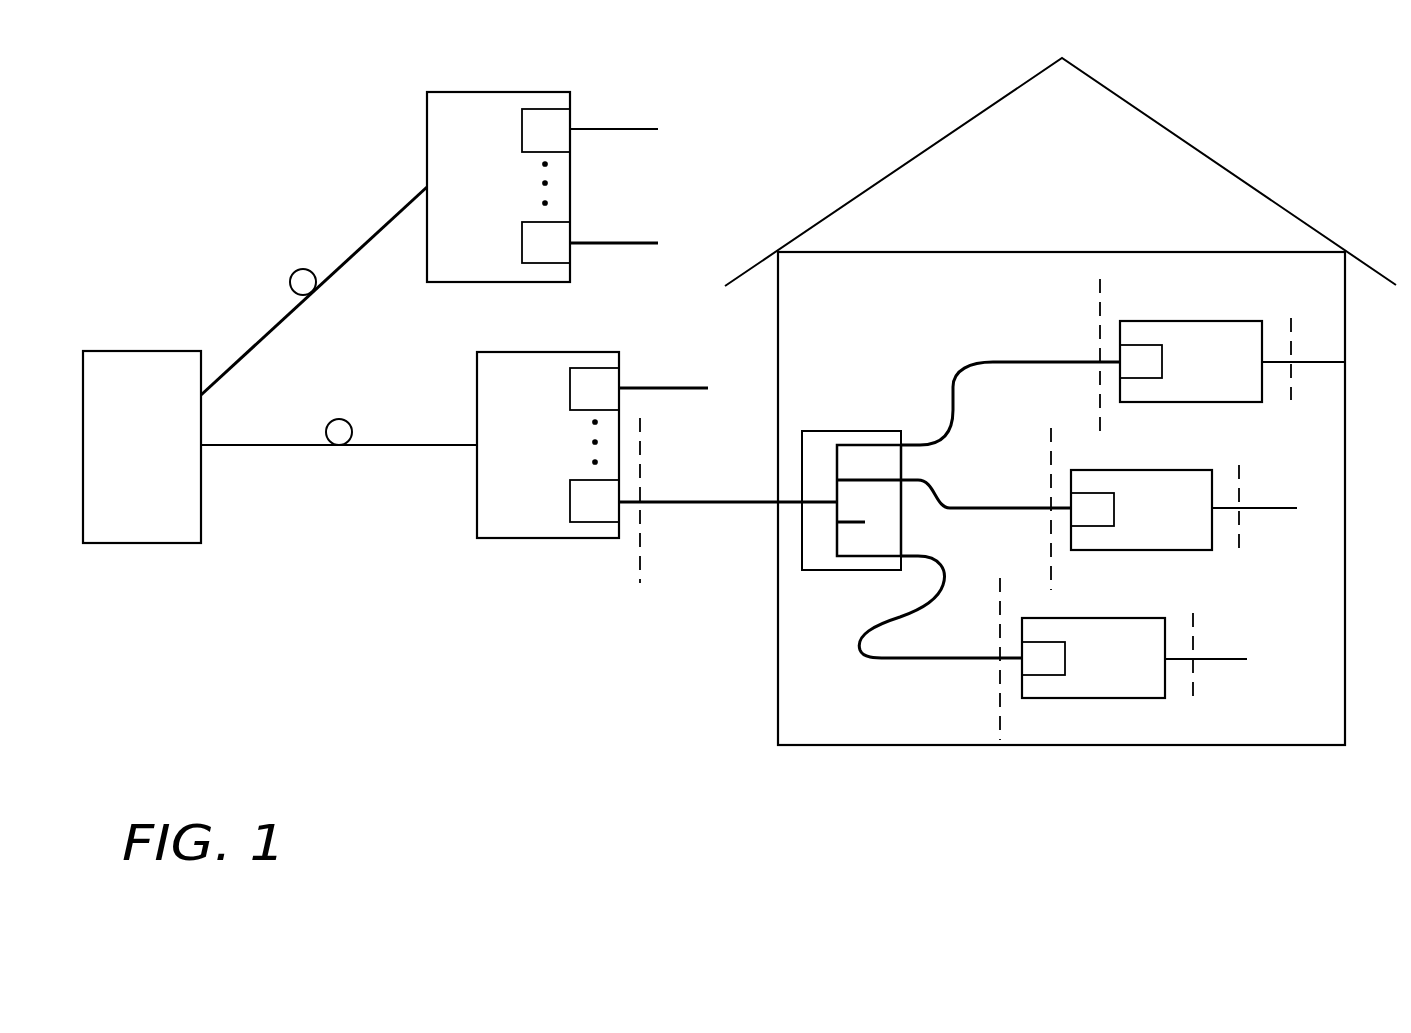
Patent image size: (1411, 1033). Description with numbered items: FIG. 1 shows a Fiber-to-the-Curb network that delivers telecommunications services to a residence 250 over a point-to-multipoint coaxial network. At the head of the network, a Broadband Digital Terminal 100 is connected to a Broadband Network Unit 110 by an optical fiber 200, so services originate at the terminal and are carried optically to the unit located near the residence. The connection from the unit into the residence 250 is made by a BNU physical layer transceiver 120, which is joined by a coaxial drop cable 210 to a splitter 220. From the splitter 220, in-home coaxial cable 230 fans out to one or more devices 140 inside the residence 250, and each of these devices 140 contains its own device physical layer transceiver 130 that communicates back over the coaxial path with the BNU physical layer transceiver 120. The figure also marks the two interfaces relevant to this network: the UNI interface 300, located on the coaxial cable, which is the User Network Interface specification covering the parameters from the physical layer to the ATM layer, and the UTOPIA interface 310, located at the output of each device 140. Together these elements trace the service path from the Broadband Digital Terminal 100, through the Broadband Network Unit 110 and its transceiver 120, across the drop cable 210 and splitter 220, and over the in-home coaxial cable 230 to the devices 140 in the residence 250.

The Broadband Digital Terminal 100 is at (133, 543).
The Broadband Network Unit 110 is at (462, 92).
The BNU physical layer transceiver 120 is at (570, 110).
The device physical layer transceiver 130 is at (1044, 676).
The devices 140 is at (1117, 698).
The optical fiber 200 is at (355, 257).
The coaxial drop cable 210 is at (617, 129).
The splitter 220 is at (817, 571).
The in-home coaxial cable 230 is at (915, 660).
The residence 250 is at (777, 354).
The UNI interface 300 is at (640, 458).
The UTOPIA interface 310 is at (1193, 670).